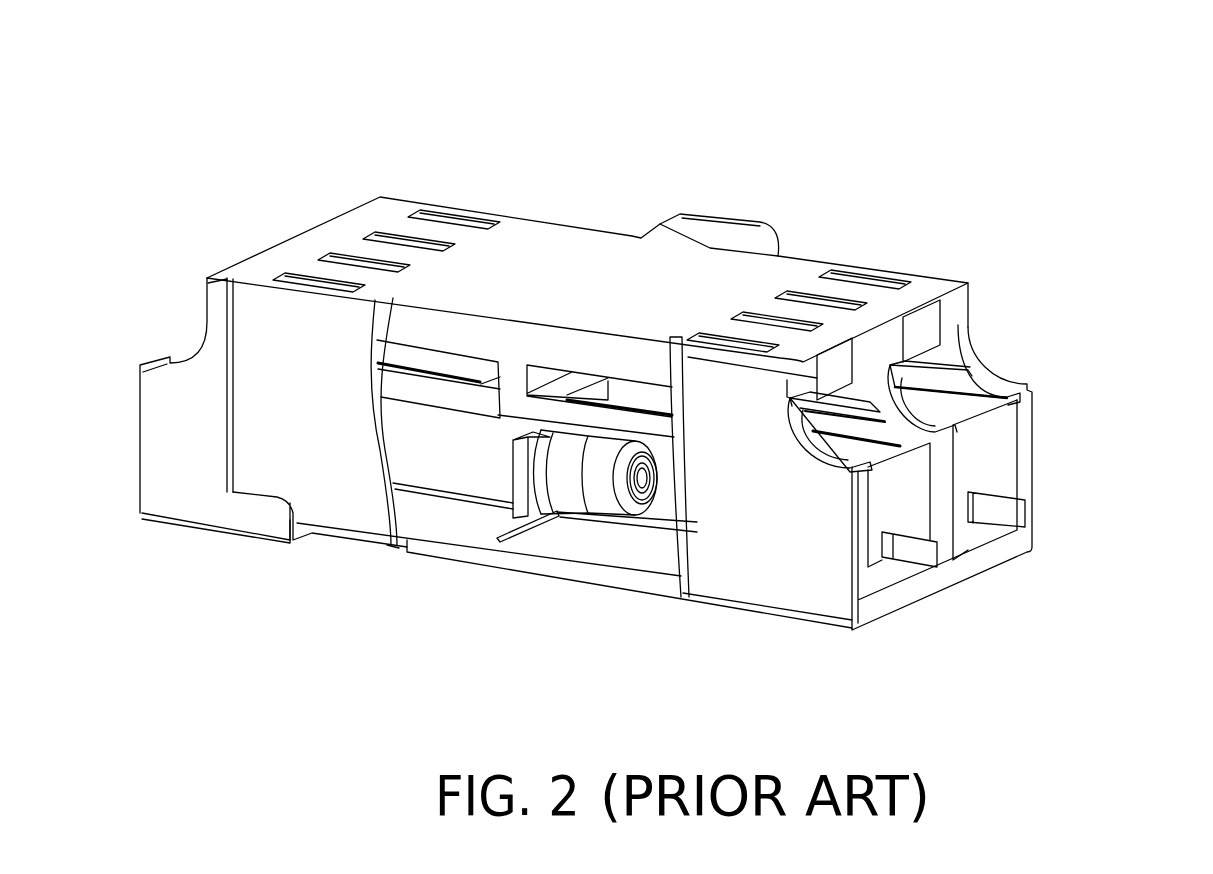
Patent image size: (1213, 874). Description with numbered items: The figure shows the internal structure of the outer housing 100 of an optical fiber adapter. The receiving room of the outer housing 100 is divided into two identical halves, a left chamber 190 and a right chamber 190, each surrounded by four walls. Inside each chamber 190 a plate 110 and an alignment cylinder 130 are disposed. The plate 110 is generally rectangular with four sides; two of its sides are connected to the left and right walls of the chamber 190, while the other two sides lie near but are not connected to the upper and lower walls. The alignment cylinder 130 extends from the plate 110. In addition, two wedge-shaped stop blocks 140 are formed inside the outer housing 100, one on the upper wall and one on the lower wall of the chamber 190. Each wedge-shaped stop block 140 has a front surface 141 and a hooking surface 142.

The outer housing 100 is at (573, 148).
The plate 110 is at (537, 505).
The alignment cylinder 130 is at (609, 503).
The wedge-shaped stop block 140 is at (500, 417).
The front surface 141 is at (495, 537).
The hooking surface 142 is at (507, 416).
The chamber 190 is at (985, 442).